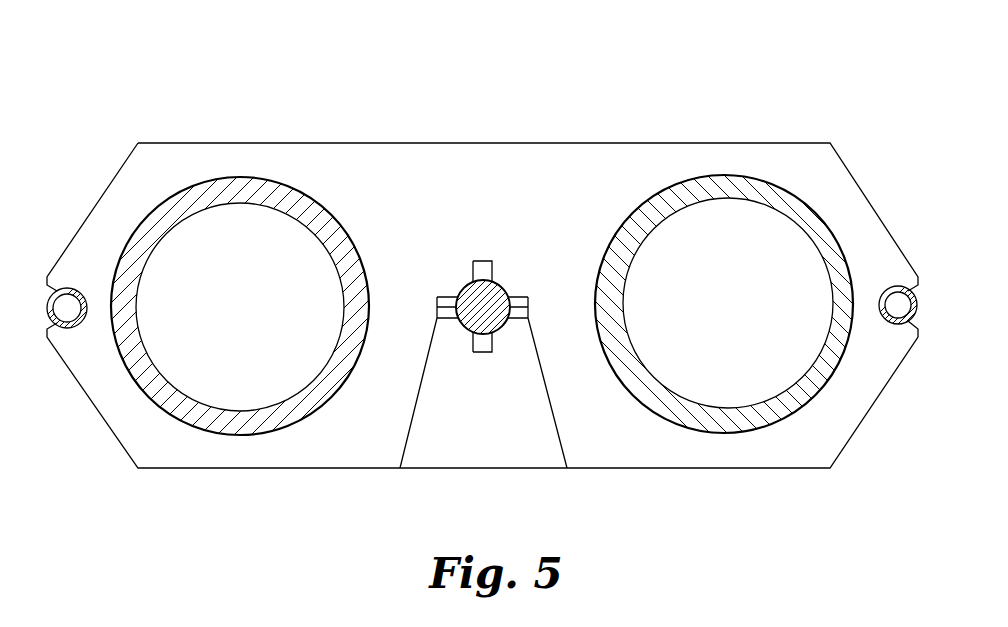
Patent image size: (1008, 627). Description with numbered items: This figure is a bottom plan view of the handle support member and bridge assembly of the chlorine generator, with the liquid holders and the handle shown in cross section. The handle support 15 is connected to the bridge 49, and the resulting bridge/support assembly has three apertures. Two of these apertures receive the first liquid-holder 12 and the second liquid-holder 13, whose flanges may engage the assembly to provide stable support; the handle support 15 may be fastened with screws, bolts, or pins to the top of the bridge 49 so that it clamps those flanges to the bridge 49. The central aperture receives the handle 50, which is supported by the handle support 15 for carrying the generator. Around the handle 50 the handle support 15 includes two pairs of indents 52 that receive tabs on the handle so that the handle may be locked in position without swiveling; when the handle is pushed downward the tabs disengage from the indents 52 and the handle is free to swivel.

The first liquid-holder 12 is at (810, 365).
The second liquid-holder 13 is at (343, 297).
The handle support 15 is at (578, 158).
The bridge 49 is at (202, 158).
The handle 50 is at (496, 284).
The indents 52 is at (482, 254).